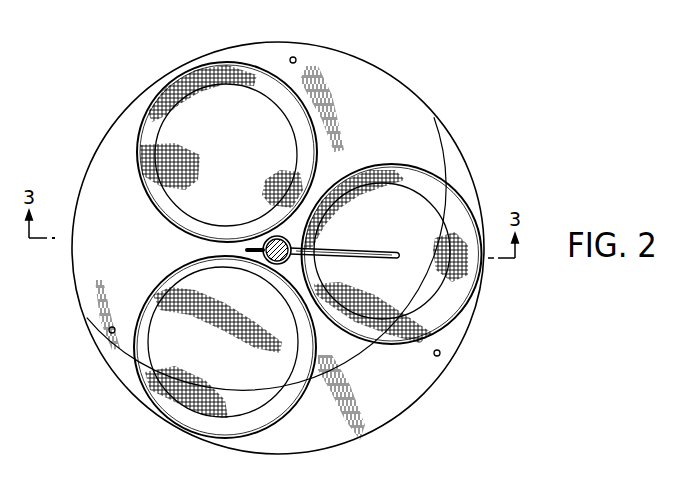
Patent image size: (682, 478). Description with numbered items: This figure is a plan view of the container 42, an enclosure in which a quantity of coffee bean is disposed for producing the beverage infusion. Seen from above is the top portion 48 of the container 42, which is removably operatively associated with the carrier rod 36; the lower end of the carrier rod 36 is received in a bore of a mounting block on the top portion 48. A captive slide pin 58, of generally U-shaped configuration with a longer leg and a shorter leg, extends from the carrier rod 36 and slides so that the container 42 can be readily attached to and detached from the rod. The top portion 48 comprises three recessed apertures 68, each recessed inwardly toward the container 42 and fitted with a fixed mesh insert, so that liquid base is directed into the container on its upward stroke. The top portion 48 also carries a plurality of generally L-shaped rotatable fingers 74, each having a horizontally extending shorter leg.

The carrier rod 36 is at (275, 263).
The container 42 is at (437, 103).
The top portion 48 is at (410, 402).
The captive slide pin 58 is at (347, 259).
The recessed apertures 68 is at (168, 86).
The fingers 74 is at (294, 57).